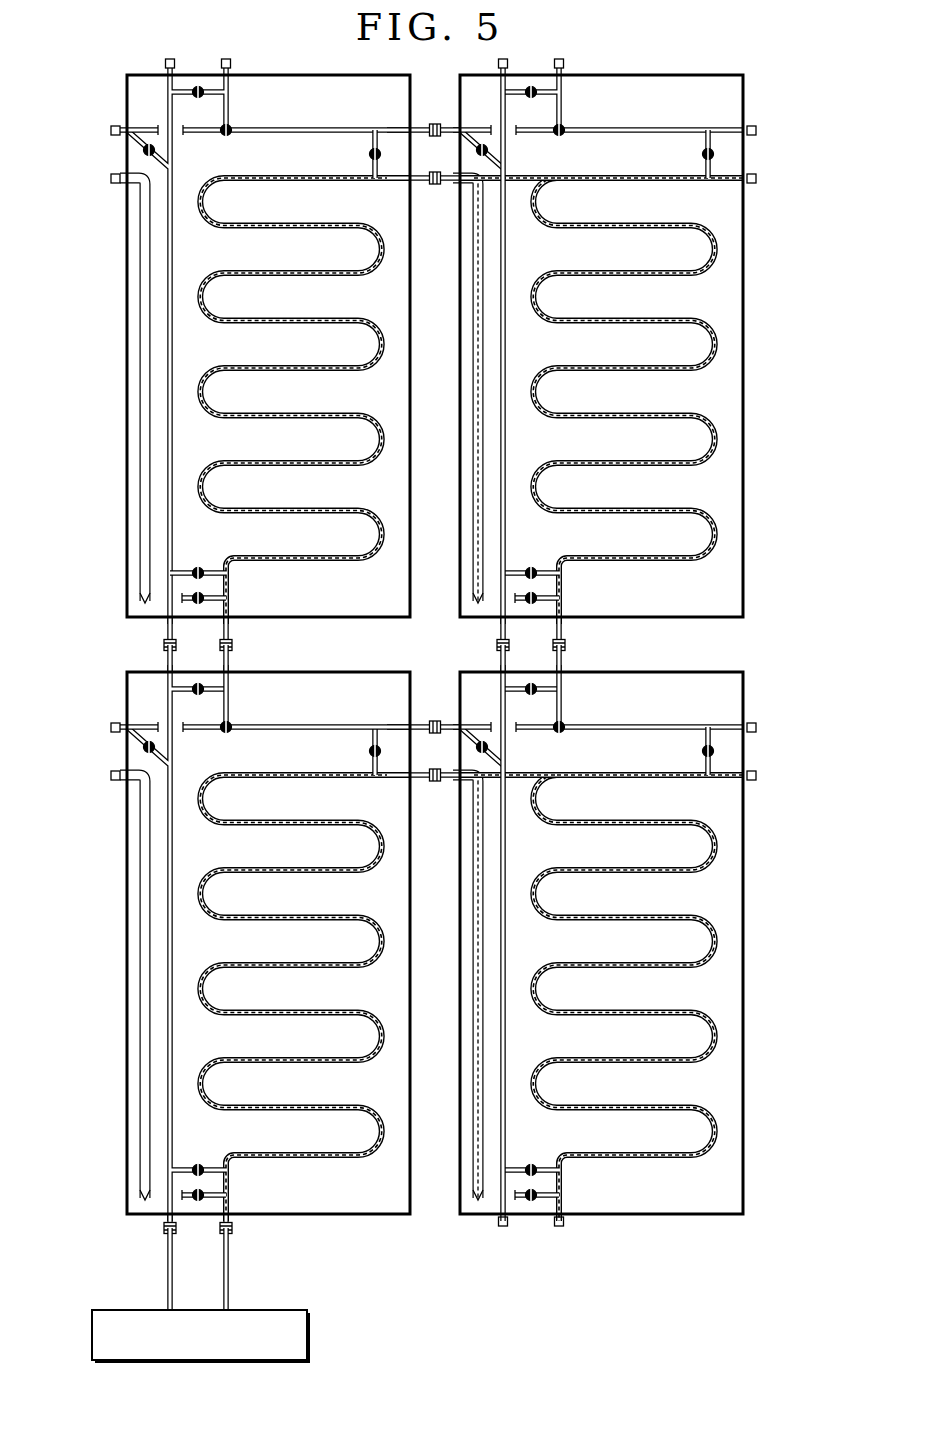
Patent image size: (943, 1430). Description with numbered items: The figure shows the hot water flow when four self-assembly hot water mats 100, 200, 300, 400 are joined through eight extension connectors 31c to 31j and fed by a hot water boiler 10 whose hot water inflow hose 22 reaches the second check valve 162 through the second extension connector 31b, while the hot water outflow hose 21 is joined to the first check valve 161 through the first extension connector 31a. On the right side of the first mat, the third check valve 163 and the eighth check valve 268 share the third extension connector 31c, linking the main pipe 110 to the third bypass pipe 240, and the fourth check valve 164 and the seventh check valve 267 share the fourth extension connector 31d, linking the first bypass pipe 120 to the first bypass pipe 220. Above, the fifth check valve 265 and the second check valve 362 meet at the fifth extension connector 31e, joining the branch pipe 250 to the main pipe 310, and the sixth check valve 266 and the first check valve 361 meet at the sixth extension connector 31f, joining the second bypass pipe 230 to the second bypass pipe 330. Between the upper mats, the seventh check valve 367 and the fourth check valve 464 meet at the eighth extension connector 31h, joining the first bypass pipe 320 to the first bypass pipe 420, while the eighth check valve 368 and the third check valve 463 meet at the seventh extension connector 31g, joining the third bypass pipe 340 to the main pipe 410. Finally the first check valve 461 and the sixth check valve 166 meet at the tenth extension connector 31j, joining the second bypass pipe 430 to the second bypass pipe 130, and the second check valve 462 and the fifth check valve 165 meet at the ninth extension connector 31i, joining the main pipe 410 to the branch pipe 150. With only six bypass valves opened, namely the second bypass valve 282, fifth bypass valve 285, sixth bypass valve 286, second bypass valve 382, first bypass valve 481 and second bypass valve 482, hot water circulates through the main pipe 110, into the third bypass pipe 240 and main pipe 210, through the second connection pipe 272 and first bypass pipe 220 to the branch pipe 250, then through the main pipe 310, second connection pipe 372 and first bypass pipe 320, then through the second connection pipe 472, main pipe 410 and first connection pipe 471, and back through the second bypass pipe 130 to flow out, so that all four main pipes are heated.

The hot water boiler 10 is at (226, 1336).
The hot water outflow hose 21 is at (143, 1269).
The hot water inflow hose 22 is at (255, 1269).
The first extension connector 31a is at (137, 1247).
The second extension connector 31b is at (255, 1247).
The third extension connector 31c is at (435, 795).
The fourth extension connector 31d is at (435, 703).
The fifth extension connector 31e is at (587, 635).
The sixth extension connector 31f is at (480, 635).
The seventh extension connector 31g is at (435, 198).
The eighth extension connector 31h is at (435, 105).
The ninth extension connector 31i is at (253, 654).
The tenth extension connector 31j is at (139, 654).
The first self-assembly hot water mat 100 is at (237, 943).
The main pipe 110 is at (305, 998).
The first bypass pipe 120 is at (265, 742).
The second bypass pipe 130 is at (107, 987).
The branch pipe 150 is at (254, 696).
The first check valve 161 is at (137, 1229).
The second check valve 162 is at (261, 1229).
The third check valve 163 is at (382, 791).
The fourth check valve 164 is at (382, 707).
The fifth check valve 165 is at (273, 673).
The sixth check valve 166 is at (122, 673).
The second self-assembly hot water mat 200 is at (635, 943).
The main pipe 210 is at (601, 998).
The first bypass pipe 220 is at (629, 708).
The second bypass pipe 230 is at (449, 987).
The third bypass pipe 240 is at (459, 943).
The branch pipe 250 is at (588, 696).
The fifth check valve 265 is at (590, 657).
The sixth check valve 266 is at (476, 657).
The seventh check valve 267 is at (453, 742).
The eighth check valve 268 is at (444, 811).
The second connection pipe 272 is at (754, 751).
The second bypass valve 282 is at (752, 743).
The fifth bypass valve 285 is at (530, 1222).
The sixth bypass valve 286 is at (585, 740).
The third self-assembly hot water mat 300 is at (635, 346).
The main pipe 310 is at (601, 401).
The first bypass pipe 320 is at (629, 114).
The second bypass pipe 330 is at (449, 390).
The third bypass pipe 340 is at (459, 346).
The first check valve 361 is at (459, 618).
The second check valve 362 is at (595, 618).
The seventh check valve 367 is at (453, 144).
The eighth check valve 368 is at (444, 215).
The second connection pipe 372 is at (754, 156).
The second bypass valve 382 is at (752, 148).
The fourth self-assembly hot water mat 400 is at (237, 346).
The main pipe 410 is at (235, 435).
The first bypass pipe 420 is at (265, 114).
The second bypass pipe 430 is at (107, 390).
The first check valve 461 is at (137, 631).
The second check valve 462 is at (261, 631).
The third check valve 463 is at (381, 195).
The fourth check valve 464 is at (381, 107).
The first connection pipe 471 is at (225, 589).
The second connection pipe 472 is at (322, 154).
The first bypass valve 481 is at (205, 556).
The second bypass valve 482 is at (348, 149).